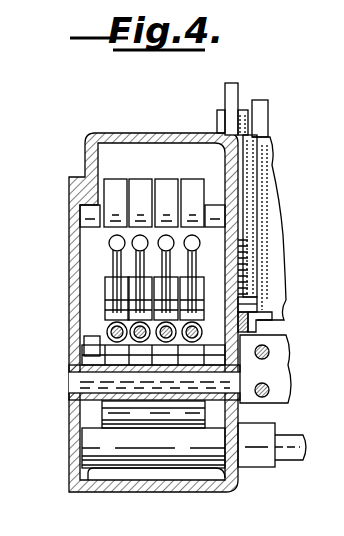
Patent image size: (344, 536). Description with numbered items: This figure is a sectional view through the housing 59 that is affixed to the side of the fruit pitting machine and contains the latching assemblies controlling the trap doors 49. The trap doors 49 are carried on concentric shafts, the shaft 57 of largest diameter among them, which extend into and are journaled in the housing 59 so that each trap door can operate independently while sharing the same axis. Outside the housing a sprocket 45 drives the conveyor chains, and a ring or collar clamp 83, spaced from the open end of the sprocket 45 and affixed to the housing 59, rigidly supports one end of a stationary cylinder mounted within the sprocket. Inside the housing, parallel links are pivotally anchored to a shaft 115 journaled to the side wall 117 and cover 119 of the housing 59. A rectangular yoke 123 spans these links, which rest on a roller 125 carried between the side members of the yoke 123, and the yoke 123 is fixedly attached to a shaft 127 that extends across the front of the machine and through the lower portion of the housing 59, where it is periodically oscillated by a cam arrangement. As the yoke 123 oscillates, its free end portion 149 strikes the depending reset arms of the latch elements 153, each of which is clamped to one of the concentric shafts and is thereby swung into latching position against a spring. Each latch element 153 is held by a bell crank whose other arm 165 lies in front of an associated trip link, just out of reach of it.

The sprocket 45 is at (266, 118).
The trap door 49 is at (282, 228).
The concentric shaft of largest diameter 57 is at (250, 302).
The housing 59 is at (203, 488).
The ring or collar clamp 83 is at (214, 120).
The shaft 115 is at (76, 386).
The side wall 117 is at (238, 404).
The cover 119 is at (84, 420).
The yoke 123 is at (238, 432).
The roller 125 is at (84, 447).
The shaft 127 is at (288, 452).
The free end portion 149 is at (100, 349).
The latch element 153 is at (117, 252).
The other arm of bell crank 165 is at (113, 192).